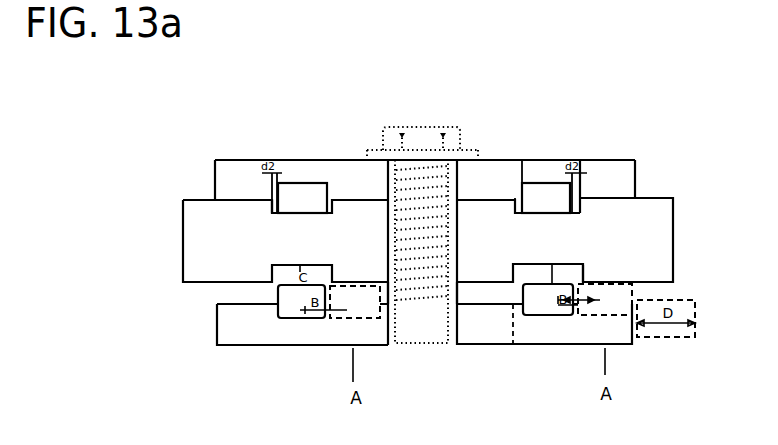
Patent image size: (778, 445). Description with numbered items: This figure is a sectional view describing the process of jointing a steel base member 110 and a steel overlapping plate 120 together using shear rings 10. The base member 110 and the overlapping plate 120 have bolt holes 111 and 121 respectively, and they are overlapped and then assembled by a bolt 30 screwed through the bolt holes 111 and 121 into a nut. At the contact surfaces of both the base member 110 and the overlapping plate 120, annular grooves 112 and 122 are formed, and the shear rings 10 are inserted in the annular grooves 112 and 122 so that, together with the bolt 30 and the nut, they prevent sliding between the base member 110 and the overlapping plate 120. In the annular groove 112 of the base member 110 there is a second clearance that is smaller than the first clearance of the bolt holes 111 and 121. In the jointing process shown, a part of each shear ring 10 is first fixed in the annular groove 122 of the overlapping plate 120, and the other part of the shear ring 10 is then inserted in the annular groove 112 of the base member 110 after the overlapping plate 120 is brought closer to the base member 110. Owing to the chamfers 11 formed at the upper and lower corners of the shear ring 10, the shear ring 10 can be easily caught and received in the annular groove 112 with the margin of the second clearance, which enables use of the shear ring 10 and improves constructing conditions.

The shear ring 10 is at (316, 198).
The chamfer 11 is at (332, 202).
The bolt 30 is at (420, 127).
The base member 110 is at (203, 242).
The bolt hole 111 is at (453, 248).
The annular groove 112 is at (272, 210).
The overlapping plate 120 is at (217, 182).
The bolt hole 121 is at (455, 183).
The annular groove 122 is at (278, 200).